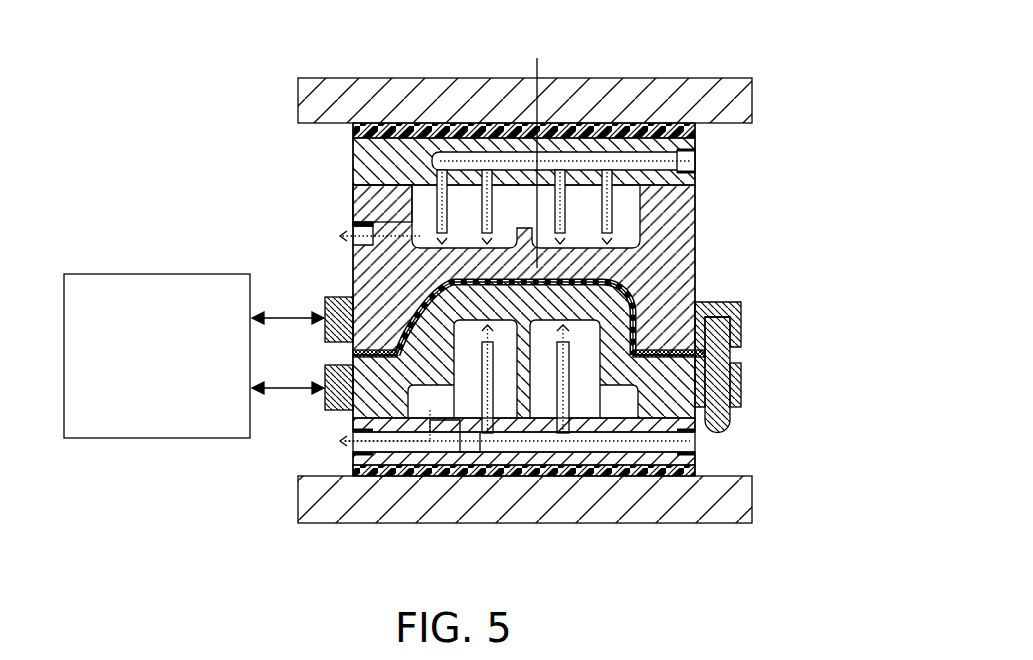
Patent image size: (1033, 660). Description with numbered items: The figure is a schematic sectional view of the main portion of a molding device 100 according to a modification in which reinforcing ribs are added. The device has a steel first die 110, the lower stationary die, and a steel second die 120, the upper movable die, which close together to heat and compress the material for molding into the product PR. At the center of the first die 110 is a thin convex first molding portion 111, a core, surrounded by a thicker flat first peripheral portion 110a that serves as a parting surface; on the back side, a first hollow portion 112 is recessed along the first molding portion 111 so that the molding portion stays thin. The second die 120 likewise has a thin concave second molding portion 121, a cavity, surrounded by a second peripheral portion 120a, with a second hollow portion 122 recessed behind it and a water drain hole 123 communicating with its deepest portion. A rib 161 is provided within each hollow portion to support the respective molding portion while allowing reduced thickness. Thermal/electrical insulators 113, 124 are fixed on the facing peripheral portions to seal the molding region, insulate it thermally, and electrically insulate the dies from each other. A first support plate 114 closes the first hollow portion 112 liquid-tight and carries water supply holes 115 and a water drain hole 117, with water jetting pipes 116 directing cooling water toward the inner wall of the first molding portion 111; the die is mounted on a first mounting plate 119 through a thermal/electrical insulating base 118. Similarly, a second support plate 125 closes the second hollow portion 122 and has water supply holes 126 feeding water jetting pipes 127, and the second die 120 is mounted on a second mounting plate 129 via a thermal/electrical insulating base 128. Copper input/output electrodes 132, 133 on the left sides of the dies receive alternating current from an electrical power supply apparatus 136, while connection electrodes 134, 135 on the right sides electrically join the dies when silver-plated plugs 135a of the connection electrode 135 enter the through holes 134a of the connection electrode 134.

The molding device 100 is at (215, 31).
The first die 110 is at (637, 403).
The first peripheral portion 110a is at (705, 325).
The first molding portion 111 is at (550, 380).
The first hollow portion 112 is at (505, 408).
The thermal/electrical insulator 113 is at (703, 358).
The first support plate 114 is at (695, 460).
The water supply hole 115 is at (680, 441).
The water jetting pipe 116 is at (480, 396).
The water drain hole 117 is at (390, 447).
The thermal/electrical insulating base 118 is at (353, 468).
The first mounting plate 119 is at (298, 498).
The second die 120 is at (695, 207).
The second peripheral portion 120a is at (353, 355).
The second molding portion 121 is at (655, 268).
The second hollow portion 122 is at (427, 218).
The water drain hole 123 is at (340, 236).
The thermal/electrical insulator 124 is at (698, 352).
The second support plate 125 is at (353, 168).
The water supply hole 126 is at (665, 170).
The water jetting pipe 127 is at (353, 200).
The thermal/electrical insulating base 128 is at (353, 130).
The second mounting plate 129 is at (752, 103).
The input/output electrode 132 is at (330, 408).
The input/output electrode 133 is at (330, 297).
The connection electrode 134 is at (741, 396).
The through hole 134a is at (720, 415).
The connection electrode 135 is at (738, 302).
The plug 135a is at (725, 302).
The electrical power supply apparatus 136 is at (158, 274).
The rib 161 is at (537, 152).
The product PR is at (475, 282).